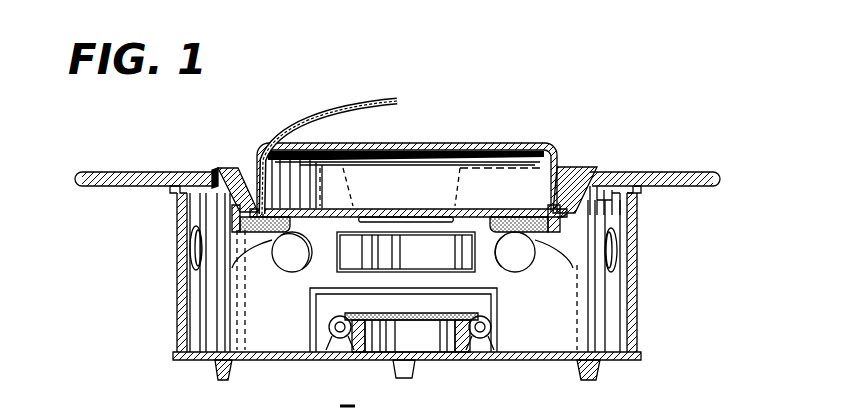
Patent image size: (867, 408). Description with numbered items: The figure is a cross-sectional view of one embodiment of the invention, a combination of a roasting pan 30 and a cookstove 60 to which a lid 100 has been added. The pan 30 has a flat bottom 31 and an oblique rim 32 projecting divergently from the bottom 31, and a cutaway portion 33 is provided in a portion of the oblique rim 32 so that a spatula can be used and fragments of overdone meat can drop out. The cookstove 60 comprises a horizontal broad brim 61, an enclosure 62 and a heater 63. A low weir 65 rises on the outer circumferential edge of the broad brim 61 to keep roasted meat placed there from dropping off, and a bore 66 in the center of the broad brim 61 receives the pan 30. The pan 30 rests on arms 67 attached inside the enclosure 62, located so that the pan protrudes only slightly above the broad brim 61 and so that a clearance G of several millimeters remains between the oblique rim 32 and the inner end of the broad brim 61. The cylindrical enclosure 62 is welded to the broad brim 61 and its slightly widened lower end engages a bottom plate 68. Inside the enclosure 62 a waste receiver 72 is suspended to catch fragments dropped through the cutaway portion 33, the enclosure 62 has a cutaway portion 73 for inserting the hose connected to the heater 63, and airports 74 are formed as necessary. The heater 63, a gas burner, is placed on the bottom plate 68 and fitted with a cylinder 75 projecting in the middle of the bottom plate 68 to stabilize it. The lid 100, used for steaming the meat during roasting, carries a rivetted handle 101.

The lid 100 is at (500, 140).
The handle 101 is at (329, 100).
The flat bottom 31 is at (410, 208).
The cutaway portion 33 is at (433, 207).
The roasting pan 30 is at (232, 170).
The oblique rim 32 is at (567, 170).
The clearance G is at (600, 186).
The broad brim 61 is at (683, 178).
The low weir 65 is at (78, 178).
The bore 66 is at (214, 181).
The cookstove 60 is at (175, 315).
The enclosure 62 is at (636, 295).
The arms 67 is at (247, 217).
The bottom plate 68 is at (318, 360).
The waste receiver 72 is at (350, 258).
The cutaway portion 73 is at (490, 300).
The airports 74 is at (287, 262).
The cylinder 75 is at (458, 338).
The heater 63 is at (492, 328).